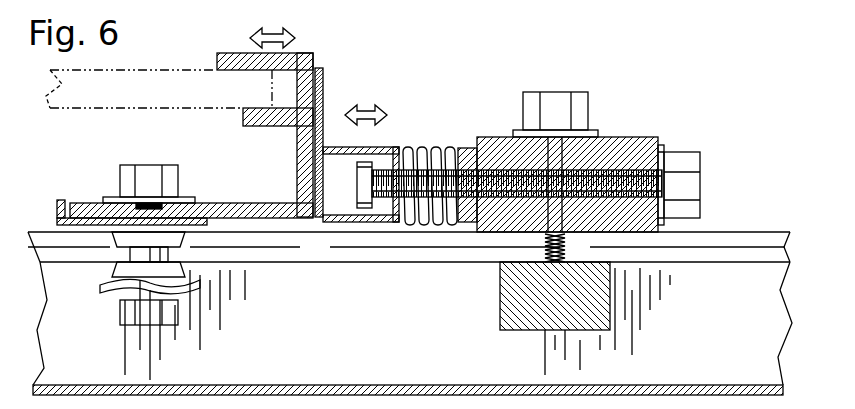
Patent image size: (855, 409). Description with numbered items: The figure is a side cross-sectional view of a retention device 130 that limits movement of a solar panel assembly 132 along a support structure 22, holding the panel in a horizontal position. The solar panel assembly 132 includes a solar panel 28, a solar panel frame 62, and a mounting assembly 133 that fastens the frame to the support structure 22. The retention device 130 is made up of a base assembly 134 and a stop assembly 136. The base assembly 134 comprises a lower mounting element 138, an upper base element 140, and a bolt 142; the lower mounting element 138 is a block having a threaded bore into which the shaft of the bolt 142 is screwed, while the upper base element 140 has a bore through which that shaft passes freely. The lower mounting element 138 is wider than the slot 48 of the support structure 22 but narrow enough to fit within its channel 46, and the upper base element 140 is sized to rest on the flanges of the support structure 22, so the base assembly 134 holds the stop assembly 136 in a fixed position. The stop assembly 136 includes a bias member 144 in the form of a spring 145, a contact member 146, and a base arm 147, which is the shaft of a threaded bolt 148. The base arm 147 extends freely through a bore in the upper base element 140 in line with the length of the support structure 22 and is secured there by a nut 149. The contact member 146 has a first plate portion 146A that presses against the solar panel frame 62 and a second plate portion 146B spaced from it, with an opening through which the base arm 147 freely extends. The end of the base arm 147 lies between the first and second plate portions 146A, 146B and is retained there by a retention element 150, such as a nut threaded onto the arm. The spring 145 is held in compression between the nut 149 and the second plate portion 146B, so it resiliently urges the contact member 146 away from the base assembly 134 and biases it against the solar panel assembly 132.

The support structure 22 is at (745, 232).
The solar panel 28 is at (112, 110).
The channel 46 is at (790, 333).
The slot 48 is at (792, 248).
The solar panel frame 62 is at (296, 165).
The retention device 130 is at (597, 134).
The solar panel assembly 132 is at (156, 121).
The mounting assembly 133 is at (85, 268).
The base assembly 134 is at (617, 135).
The stop assembly 136 is at (372, 193).
The lower mounting element 138 is at (500, 308).
The upper base element 140 is at (658, 142).
The bolt 142 is at (535, 92).
The bias member 144 is at (420, 145).
The spring 145 is at (462, 150).
The contact member 146 is at (243, 130).
The first plate portion 146A is at (326, 95).
The second plate portion 146B is at (392, 205).
The base arm 147 is at (625, 205).
The threaded bolt 148 is at (696, 152).
The nut 149 is at (466, 225).
The retention element 150 is at (357, 200).